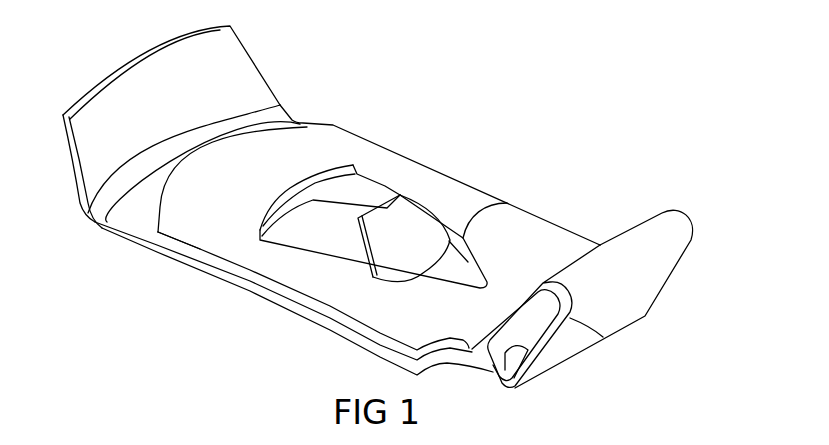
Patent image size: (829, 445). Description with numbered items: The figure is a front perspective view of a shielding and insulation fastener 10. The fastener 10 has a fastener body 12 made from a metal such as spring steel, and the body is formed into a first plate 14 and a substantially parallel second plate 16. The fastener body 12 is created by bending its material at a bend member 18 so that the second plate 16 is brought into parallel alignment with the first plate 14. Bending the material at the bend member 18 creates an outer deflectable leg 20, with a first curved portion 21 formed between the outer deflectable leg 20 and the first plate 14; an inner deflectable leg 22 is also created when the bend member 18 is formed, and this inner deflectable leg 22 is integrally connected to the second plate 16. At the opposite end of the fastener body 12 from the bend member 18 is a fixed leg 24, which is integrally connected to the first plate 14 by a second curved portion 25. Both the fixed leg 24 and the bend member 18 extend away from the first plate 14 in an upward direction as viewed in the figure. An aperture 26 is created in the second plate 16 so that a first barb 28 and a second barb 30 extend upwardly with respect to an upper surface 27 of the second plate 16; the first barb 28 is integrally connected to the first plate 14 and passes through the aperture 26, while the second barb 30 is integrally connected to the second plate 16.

The fastener 10 is at (452, 131).
The fastener body 12 is at (116, 242).
The first plate 14 is at (130, 225).
The second plate 16 is at (342, 133).
The bend member 18 is at (603, 338).
The outer deflectable leg 20 is at (545, 346).
The first curved portion 21 is at (537, 350).
The inner deflectable leg 22 is at (505, 358).
The fixed leg 24 is at (73, 160).
The second curved portion 25 is at (278, 110).
The aperture 26 is at (507, 203).
The upper surface 27 is at (195, 232).
The first barb 28 is at (407, 212).
The second barb 30 is at (353, 168).